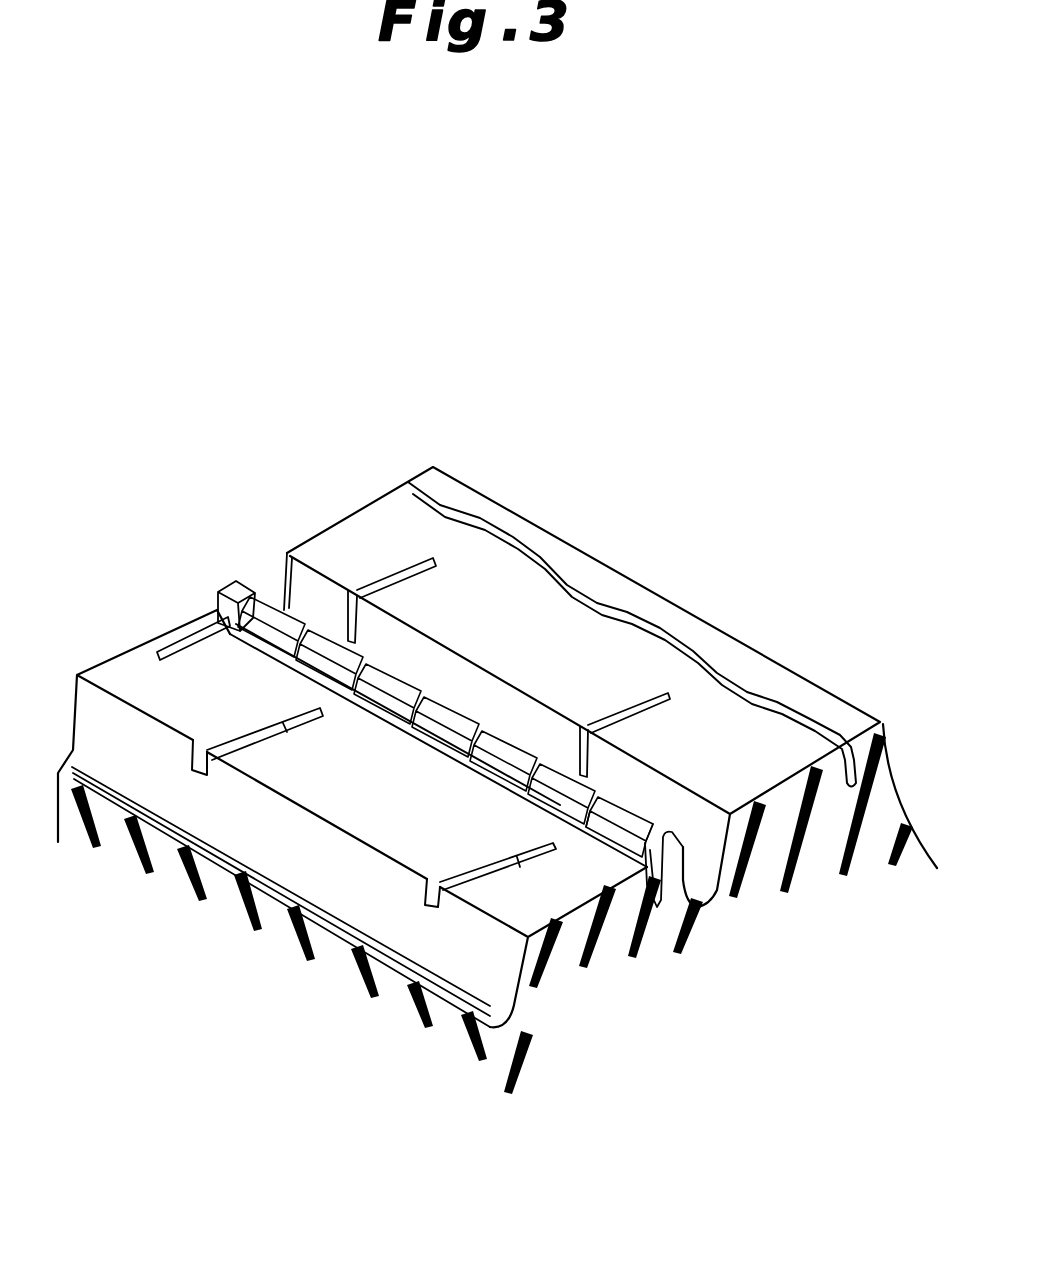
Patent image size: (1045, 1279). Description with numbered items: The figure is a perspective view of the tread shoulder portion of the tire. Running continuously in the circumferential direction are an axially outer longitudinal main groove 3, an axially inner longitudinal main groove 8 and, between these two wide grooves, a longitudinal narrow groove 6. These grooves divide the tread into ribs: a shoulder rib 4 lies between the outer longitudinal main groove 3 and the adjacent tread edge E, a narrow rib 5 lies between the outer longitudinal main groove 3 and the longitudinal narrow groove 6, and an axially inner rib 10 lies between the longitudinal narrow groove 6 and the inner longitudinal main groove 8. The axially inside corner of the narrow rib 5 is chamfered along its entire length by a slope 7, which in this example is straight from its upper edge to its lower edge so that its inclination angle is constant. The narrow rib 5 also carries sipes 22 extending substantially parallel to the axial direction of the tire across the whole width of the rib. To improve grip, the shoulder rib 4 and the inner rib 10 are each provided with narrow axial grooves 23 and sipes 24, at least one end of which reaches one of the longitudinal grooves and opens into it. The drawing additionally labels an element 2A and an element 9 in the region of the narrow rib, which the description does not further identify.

The axially outer longitudinal main groove 3 is at (713, 848).
The shoulder rib 4 is at (313, 607).
The narrow rib 5 is at (417, 637).
The longitudinal narrow groove 6 is at (620, 832).
The slope 7 is at (242, 588).
The axially inner longitudinal main groove 8 is at (440, 951).
The end portion 9 is at (678, 950).
The axially inner rib 10 is at (383, 828).
The sipes 22 is at (553, 760).
The narrow axial grooves 23 is at (215, 737).
The sipes 24 is at (410, 562).
The hinge block 2A is at (262, 620).
The tread edge E is at (713, 630).